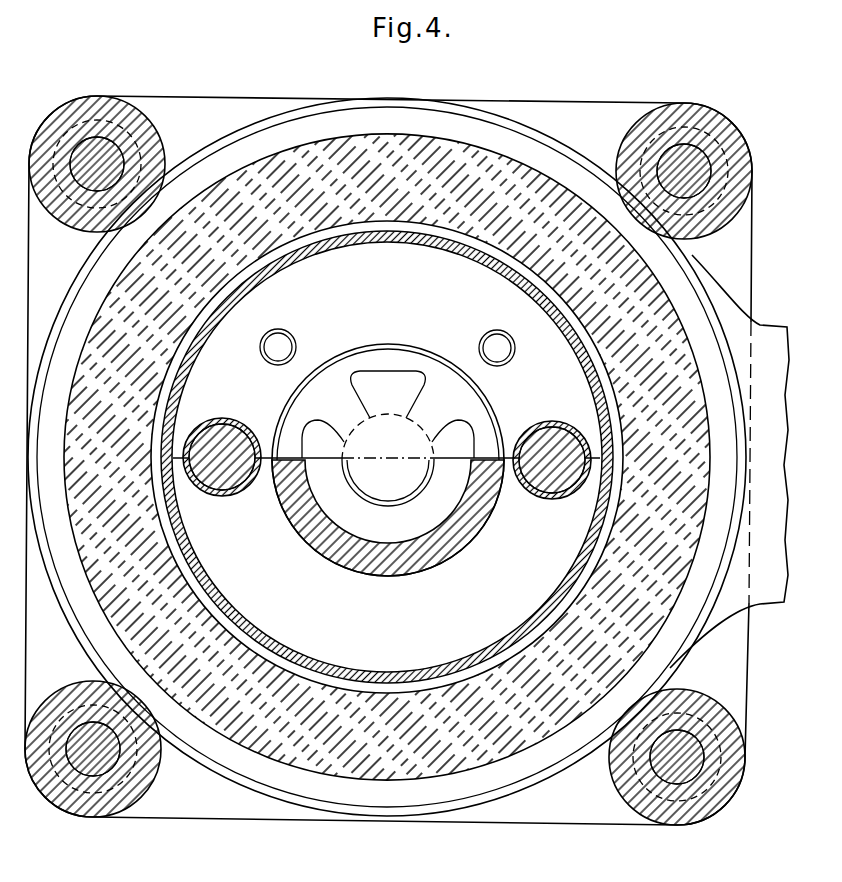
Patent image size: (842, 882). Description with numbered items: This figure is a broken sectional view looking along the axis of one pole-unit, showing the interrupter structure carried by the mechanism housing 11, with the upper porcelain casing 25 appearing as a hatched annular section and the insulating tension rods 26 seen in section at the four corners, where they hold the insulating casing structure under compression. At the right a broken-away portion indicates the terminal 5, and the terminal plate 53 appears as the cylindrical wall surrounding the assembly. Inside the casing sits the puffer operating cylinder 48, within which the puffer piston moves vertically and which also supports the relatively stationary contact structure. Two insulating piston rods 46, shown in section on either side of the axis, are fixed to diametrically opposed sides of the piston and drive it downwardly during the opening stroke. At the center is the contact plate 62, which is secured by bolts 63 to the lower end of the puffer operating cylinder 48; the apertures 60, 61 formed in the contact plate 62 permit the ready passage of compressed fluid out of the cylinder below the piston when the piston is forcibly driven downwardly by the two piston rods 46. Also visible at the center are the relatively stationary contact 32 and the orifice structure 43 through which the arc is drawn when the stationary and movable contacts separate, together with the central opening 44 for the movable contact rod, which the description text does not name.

The terminal 5 is at (766, 337).
The mechanism housing 11 is at (190, 96).
The upper porcelain casing 25 is at (278, 168).
The tension rods 26 is at (88, 102).
The relatively stationary contact 32 is at (424, 432).
The orifice structure 43 is at (400, 578).
The central bore 44 is at (388, 504).
The insulating piston rods 46 is at (240, 418).
The puffer operating cylinder 48 is at (200, 353).
The terminal plate 53 is at (520, 800).
The aperture 60 is at (308, 423).
The aperture 61 is at (384, 366).
The contact plate 62 is at (345, 375).
The bolts 63 is at (278, 347).